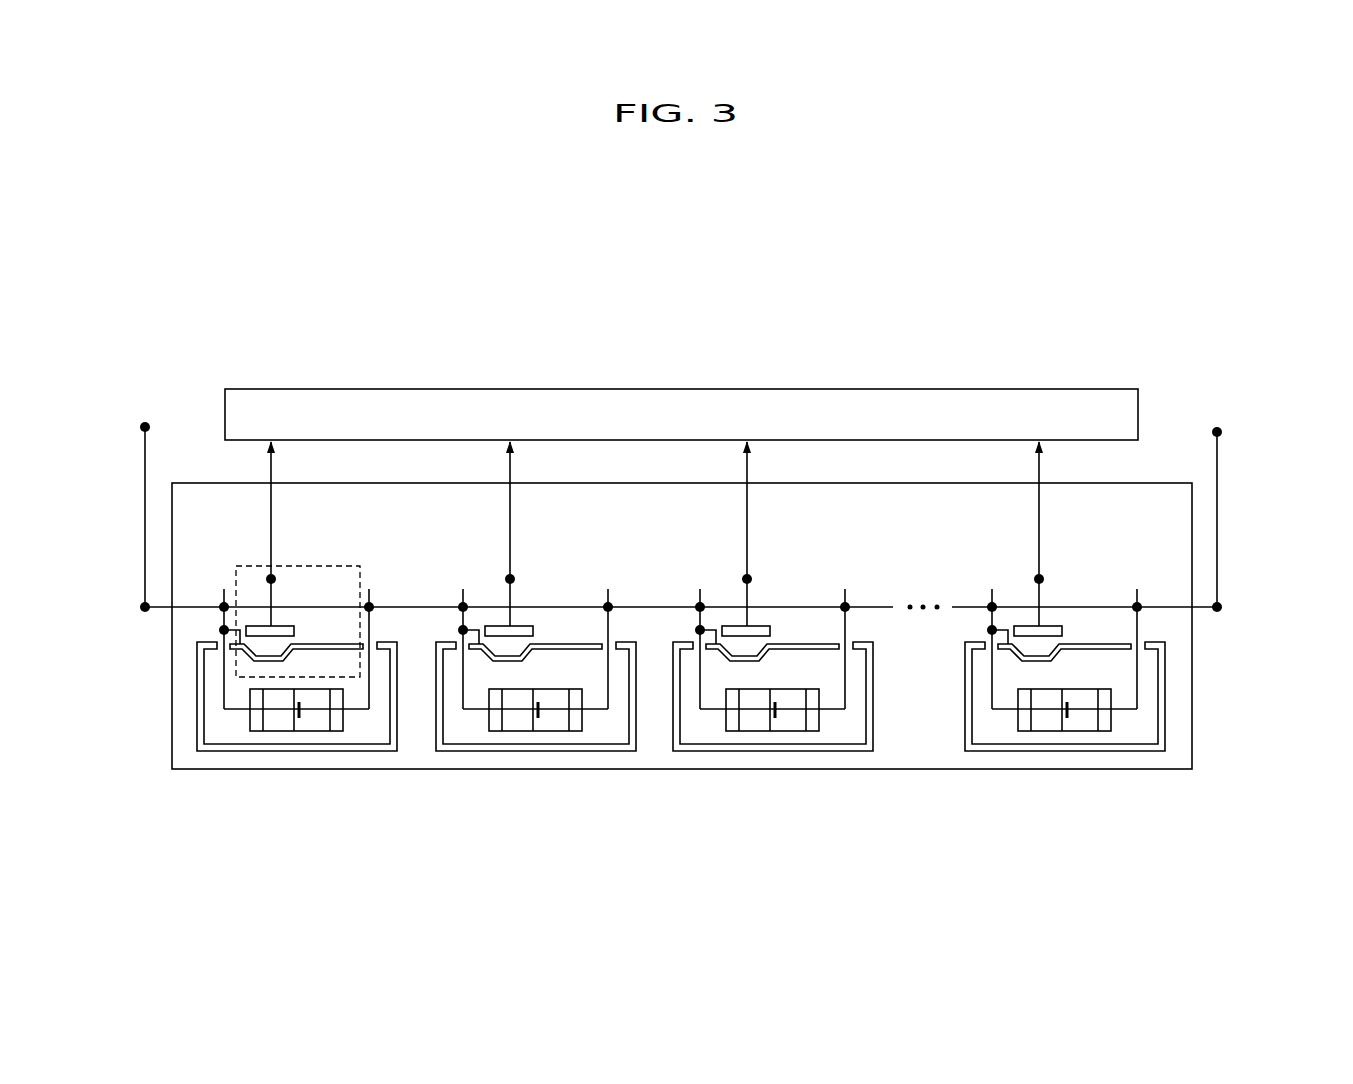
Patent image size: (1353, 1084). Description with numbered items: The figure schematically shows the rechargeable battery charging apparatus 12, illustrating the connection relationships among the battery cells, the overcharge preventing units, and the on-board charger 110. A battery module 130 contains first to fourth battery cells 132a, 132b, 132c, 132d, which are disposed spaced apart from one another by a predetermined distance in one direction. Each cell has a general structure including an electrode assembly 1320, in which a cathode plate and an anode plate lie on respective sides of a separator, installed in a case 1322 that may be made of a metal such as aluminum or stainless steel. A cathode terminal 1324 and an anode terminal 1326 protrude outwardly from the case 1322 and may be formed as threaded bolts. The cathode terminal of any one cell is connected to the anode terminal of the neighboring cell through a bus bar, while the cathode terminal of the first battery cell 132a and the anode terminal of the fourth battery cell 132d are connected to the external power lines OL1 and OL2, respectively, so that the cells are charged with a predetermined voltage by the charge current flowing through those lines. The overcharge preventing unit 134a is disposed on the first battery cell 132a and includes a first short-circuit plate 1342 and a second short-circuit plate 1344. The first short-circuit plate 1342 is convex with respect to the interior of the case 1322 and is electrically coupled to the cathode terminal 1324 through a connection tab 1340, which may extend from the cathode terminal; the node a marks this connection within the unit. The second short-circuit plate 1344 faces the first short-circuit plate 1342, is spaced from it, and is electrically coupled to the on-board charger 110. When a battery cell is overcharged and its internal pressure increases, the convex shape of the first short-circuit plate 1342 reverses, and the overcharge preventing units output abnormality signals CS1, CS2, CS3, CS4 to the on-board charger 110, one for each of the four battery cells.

The rechargeable battery charging apparatus 12 is at (659, 328).
The on-board charger 110 is at (835, 389).
The battery module 130 is at (1192, 548).
The first battery cell 132a is at (262, 635).
The second battery cell 132b is at (536, 635).
The third battery cell 132c is at (773, 635).
The fourth battery cell 132d is at (1065, 635).
The overcharge preventing unit 134a is at (294, 582).
The electrode assembly 1320 is at (289, 732).
The case 1322 is at (223, 750).
The cathode terminal 1324 is at (223, 595).
The anode terminal 1326 is at (370, 598).
The connection tab 1340 is at (222, 617).
The first short-circuit plate 1342 is at (293, 658).
The second short-circuit plate 1344 is at (297, 627).
The node a is at (282, 578).
The external power line OL1 is at (145, 511).
The external power line OL2 is at (1218, 503).
The abnormality signal CS1 is at (296, 534).
The abnormality signal CS2 is at (533, 534).
The abnormality signal CS3 is at (771, 534).
The abnormality signal CS4 is at (1062, 534).